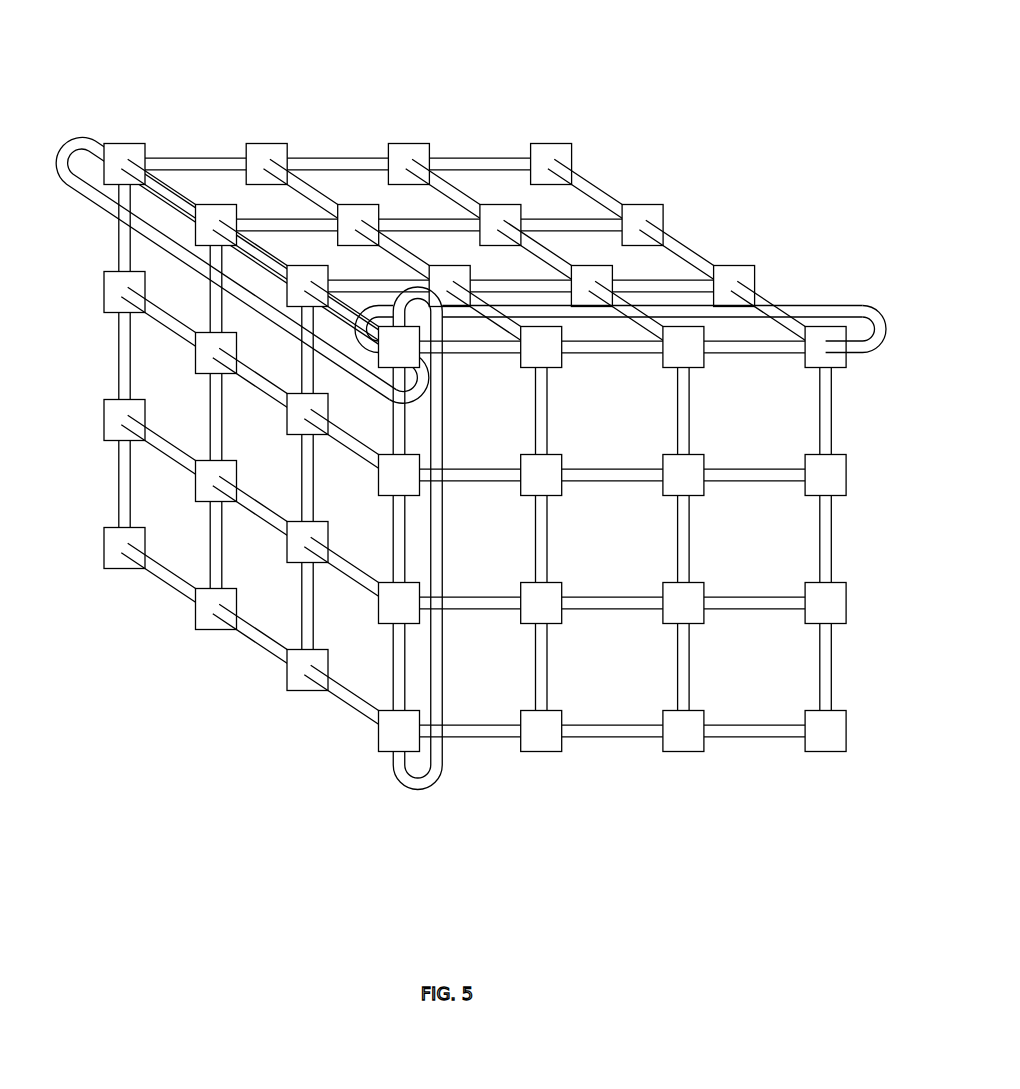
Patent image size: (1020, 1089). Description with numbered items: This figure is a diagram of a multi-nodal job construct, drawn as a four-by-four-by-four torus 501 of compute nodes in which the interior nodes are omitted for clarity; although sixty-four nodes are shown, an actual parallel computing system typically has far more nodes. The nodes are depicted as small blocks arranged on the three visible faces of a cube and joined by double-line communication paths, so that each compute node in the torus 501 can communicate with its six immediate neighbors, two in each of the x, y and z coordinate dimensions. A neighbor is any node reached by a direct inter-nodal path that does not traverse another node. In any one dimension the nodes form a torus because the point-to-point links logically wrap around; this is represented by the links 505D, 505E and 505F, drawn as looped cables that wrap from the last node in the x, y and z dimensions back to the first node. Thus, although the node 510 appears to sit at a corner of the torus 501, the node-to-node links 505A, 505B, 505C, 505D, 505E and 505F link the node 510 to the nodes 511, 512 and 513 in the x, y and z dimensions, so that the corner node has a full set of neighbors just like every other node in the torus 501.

The torus 501 is at (619, 69).
The node-to-node link 505A is at (462, 352).
The node-to-node link 505B is at (422, 433).
The node-to-node link 505C is at (357, 308).
The wrap-around link 505D is at (862, 306).
The wrap-around link 505E is at (427, 792).
The wrap-around link 505F is at (70, 136).
The node 510 is at (392, 357).
The node 511 is at (841, 369).
The node 512 is at (378, 745).
The node 513 is at (132, 142).